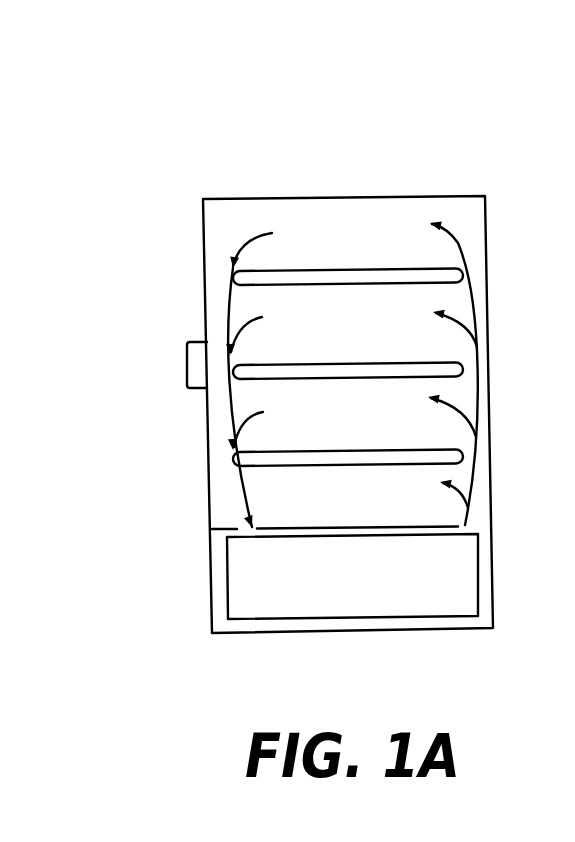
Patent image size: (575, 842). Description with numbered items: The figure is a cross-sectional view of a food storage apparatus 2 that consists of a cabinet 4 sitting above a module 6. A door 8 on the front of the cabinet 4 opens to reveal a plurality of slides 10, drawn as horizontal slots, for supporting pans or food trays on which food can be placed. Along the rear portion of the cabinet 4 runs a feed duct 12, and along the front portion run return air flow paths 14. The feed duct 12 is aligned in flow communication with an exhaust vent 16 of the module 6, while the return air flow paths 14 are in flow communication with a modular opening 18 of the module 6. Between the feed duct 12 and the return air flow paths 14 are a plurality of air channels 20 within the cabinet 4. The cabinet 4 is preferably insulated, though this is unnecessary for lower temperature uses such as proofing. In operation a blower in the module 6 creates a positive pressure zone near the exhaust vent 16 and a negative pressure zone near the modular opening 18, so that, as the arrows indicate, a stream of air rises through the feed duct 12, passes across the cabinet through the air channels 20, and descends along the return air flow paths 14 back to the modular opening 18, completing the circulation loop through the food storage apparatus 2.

The food storage apparatus 2 is at (311, 152).
The cabinet 4 is at (377, 197).
The module 6 is at (413, 617).
The door 8 is at (187, 363).
The slides 10 is at (455, 275).
The feed duct 12 is at (480, 414).
The return air flow paths 14 is at (240, 487).
The exhaust vent 16 is at (473, 520).
The modular opening 18 is at (247, 528).
The air channels 20 is at (415, 330).